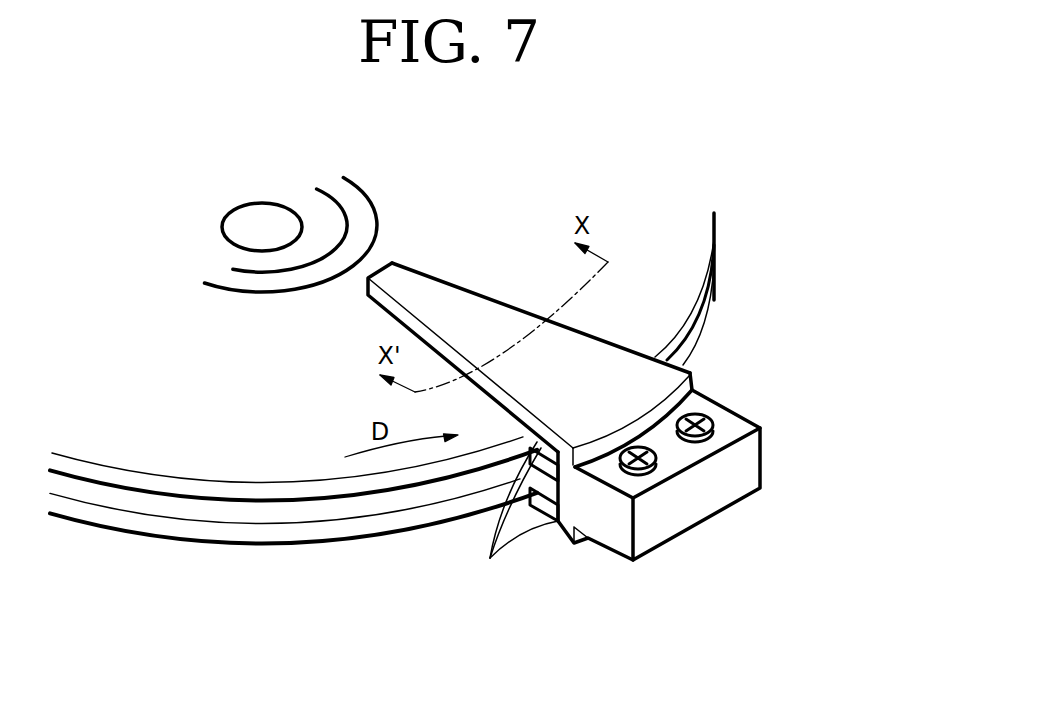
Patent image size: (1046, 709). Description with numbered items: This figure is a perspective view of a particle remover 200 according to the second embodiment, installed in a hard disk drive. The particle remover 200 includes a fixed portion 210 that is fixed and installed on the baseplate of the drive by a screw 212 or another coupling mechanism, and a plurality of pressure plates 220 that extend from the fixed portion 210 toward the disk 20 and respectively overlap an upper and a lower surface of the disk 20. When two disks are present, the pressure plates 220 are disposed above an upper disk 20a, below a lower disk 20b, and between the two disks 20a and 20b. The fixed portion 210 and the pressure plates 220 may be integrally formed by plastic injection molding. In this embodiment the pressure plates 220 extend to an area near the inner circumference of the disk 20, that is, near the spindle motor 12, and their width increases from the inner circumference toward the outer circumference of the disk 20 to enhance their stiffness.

The spindle motor 12 is at (333, 224).
The disk 20 is at (293, 551).
The upper disk 20a is at (250, 493).
The lower disk 20b is at (258, 615).
The particle remover 200 is at (631, 429).
The fixed portion 210 is at (662, 525).
The screw 212 is at (713, 420).
The pressure plates 220 is at (490, 559).